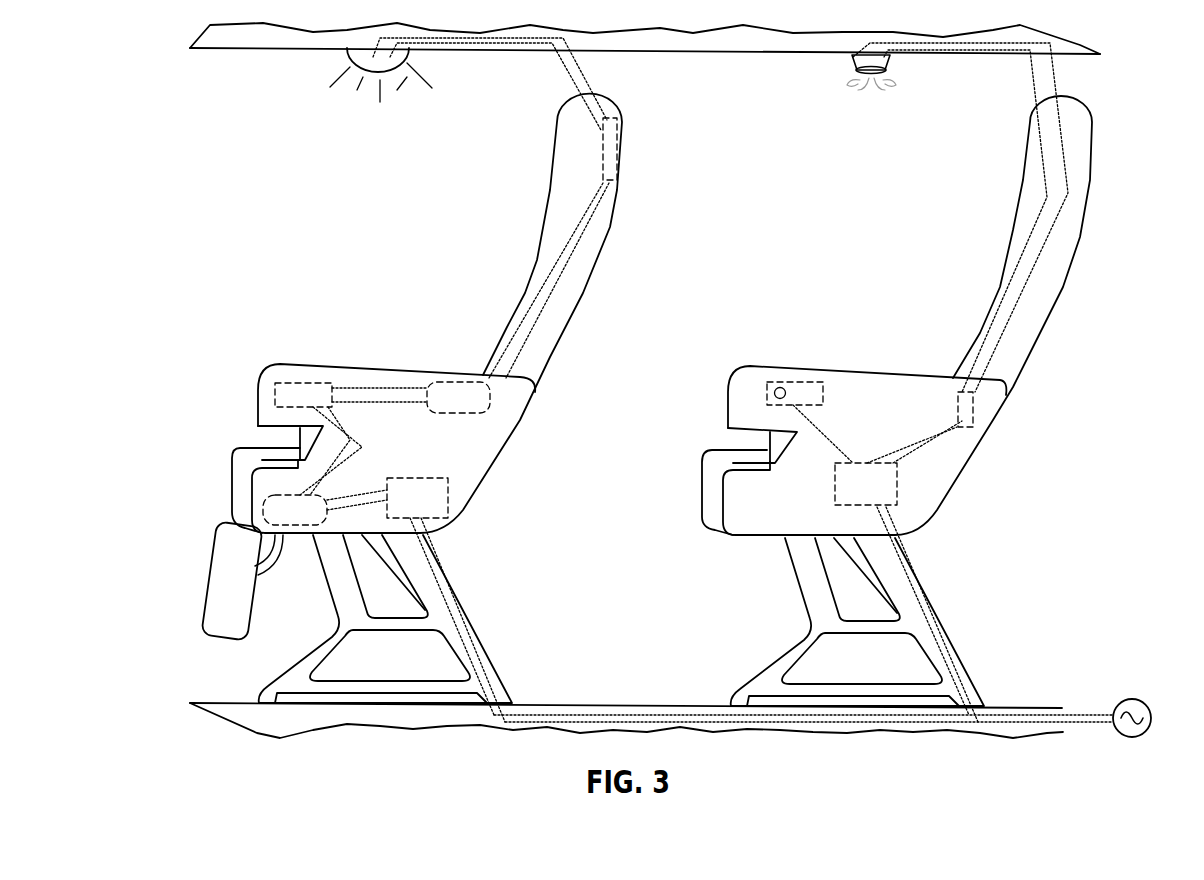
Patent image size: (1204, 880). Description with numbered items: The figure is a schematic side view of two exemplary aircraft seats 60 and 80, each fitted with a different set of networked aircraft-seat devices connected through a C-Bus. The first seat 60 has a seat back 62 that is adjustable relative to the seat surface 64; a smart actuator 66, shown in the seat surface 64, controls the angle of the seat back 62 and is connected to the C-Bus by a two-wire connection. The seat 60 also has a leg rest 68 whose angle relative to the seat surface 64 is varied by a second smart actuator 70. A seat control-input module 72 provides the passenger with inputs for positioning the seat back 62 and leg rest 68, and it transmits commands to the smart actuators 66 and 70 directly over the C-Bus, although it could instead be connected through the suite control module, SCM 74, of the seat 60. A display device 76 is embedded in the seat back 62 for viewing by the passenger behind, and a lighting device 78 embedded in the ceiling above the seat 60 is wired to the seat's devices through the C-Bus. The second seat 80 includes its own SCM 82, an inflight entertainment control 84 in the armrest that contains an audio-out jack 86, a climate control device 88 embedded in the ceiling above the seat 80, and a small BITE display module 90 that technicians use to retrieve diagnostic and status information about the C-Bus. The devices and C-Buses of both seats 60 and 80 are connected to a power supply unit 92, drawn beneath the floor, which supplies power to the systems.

The aircraft seat 60 is at (338, 331).
The seat back 62 is at (540, 223).
The seat surface 64 is at (500, 455).
The smart actuator 66 is at (453, 382).
The leg rest 68 is at (213, 540).
The smart actuator 70 is at (280, 493).
The seat control-input module 72 is at (305, 382).
The suite control module (SCM) 74 is at (450, 503).
The display device 76 is at (605, 181).
The lighting device 78 is at (370, 73).
The aircraft seat 80 is at (1006, 473).
The SCM 82 is at (897, 488).
The inflight entertainment control 84 is at (808, 383).
The audio-out jack 86 is at (777, 390).
The climate control device 88 is at (851, 57).
The BITE display module 90 is at (973, 412).
The power supply unit 92 is at (1119, 698).